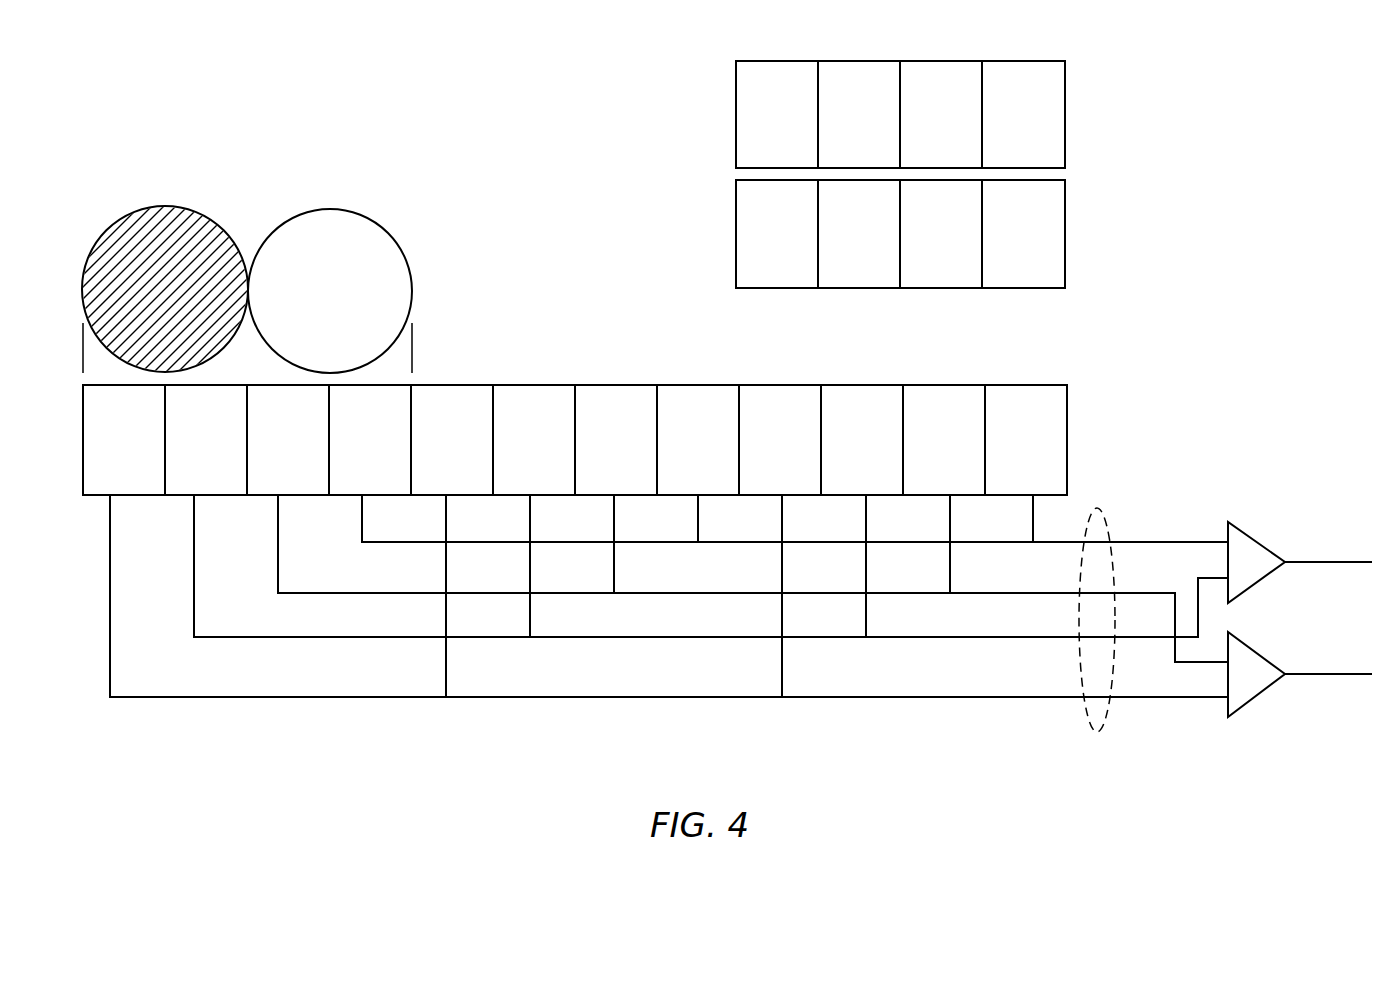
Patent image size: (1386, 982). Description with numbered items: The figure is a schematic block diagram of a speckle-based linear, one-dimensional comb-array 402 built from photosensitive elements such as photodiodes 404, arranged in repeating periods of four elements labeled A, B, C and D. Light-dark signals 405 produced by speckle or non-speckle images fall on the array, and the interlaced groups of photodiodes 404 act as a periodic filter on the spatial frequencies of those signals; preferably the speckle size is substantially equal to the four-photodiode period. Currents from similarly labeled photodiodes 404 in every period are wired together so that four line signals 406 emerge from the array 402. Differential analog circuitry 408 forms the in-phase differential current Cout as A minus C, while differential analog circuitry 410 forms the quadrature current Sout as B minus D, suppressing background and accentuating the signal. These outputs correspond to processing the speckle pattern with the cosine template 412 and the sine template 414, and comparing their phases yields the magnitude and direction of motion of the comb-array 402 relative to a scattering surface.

The 1D comb-array 402 is at (1114, 436).
The photodiodes 404 is at (1025, 385).
The light-dark signals 405 is at (436, 289).
The line signals 406 is at (1099, 510).
The differential analog circuitry 408 is at (1254, 703).
The differential analog circuitry 410 is at (1252, 531).
The cosine template 412 is at (628, 113).
The sine template 414 is at (628, 223).